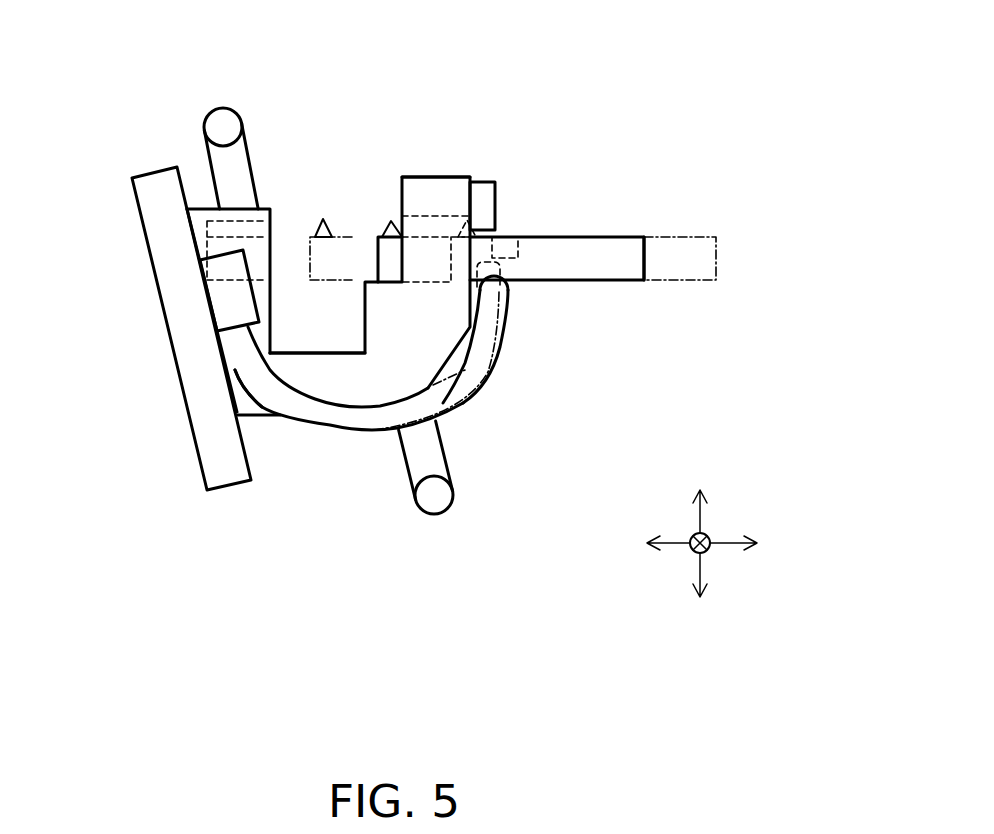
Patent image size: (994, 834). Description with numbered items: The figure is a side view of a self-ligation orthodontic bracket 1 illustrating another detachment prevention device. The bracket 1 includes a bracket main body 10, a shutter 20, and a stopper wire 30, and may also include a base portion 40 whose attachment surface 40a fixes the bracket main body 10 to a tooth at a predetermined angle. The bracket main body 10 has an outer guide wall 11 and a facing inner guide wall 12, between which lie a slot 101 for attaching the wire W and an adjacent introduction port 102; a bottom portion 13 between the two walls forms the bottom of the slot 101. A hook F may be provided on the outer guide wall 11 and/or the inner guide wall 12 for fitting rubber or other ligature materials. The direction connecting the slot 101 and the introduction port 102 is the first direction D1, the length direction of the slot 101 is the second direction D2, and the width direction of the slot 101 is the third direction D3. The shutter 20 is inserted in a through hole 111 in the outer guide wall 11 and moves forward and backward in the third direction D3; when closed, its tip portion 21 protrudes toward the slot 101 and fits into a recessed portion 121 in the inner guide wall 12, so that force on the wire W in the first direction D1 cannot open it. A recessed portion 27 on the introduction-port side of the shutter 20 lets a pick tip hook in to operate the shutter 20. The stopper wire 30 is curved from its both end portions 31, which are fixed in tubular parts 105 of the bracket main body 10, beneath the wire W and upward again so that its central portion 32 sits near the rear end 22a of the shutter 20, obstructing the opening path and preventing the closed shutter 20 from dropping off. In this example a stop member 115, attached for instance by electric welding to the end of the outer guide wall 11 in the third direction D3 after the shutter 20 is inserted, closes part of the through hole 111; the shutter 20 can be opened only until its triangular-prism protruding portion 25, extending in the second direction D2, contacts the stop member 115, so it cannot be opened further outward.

The bracket 1 is at (462, 82).
The bracket main body 10 is at (461, 177).
The outer guide wall 11 is at (423, 188).
The through hole 111 is at (451, 237).
The stop member 115 is at (487, 195).
The inner guide wall 12 is at (200, 212).
The recessed portion 121 is at (207, 250).
The bottom portion 13 is at (345, 388).
The slot 101 is at (322, 352).
The introduction port 102 is at (293, 240).
The tubular part 105 is at (220, 305).
The shutter 20 is at (618, 264).
The tip portion 21 is at (390, 258).
The rear end 22a is at (646, 260).
The protruding portion 25 is at (388, 232).
The recessed portion 27 is at (507, 237).
The stopper wire 30 is at (470, 384).
The end portions 31 is at (242, 363).
The central portion 32 is at (505, 292).
The base portion 40 is at (148, 171).
The attachment surface 40a is at (192, 430).
The hook F is at (223, 127).
The wire W is at (293, 342).
The first direction D1 is at (700, 509).
The second direction D2 is at (720, 553).
The third direction D3 is at (719, 545).